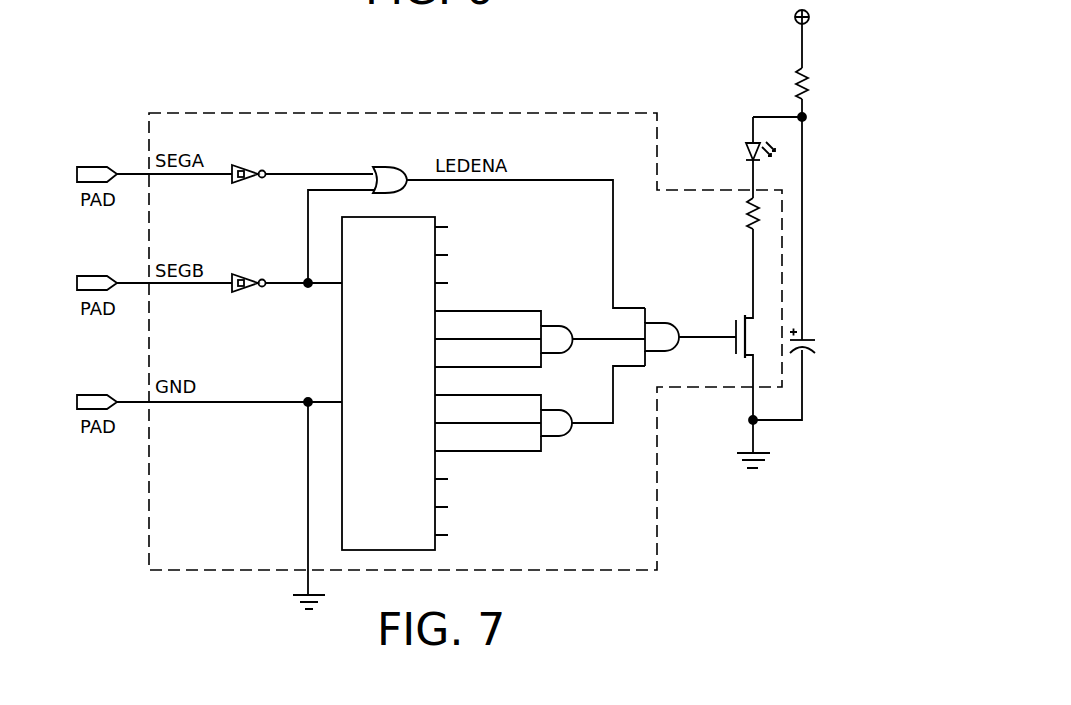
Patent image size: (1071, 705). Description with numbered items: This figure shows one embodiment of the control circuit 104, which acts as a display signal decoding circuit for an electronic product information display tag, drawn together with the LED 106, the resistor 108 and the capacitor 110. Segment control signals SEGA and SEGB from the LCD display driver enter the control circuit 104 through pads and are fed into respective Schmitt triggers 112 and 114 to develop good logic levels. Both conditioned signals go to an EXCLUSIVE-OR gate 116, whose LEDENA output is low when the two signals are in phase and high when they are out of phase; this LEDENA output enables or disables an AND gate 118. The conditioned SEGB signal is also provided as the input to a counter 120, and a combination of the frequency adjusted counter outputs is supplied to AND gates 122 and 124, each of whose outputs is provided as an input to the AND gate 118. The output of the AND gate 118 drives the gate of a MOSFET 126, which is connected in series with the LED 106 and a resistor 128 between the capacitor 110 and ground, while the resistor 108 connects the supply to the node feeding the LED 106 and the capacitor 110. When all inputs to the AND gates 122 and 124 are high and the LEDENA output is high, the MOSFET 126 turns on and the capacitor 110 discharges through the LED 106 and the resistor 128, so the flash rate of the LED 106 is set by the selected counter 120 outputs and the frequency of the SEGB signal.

The control circuit 104 is at (385, 112).
The LED 106 is at (749, 141).
The resistor 108 is at (797, 70).
The capacitor 110 is at (811, 338).
The Schmitt trigger 112 is at (245, 165).
The Schmitt trigger 114 is at (244, 274).
The EXCLUSIVE-OR gate 116 is at (387, 165).
The AND gate 118 is at (665, 323).
The counter 120 is at (342, 500).
The AND gate 122 is at (560, 326).
The AND gate 124 is at (562, 437).
The MOSFET 126 is at (735, 345).
The resistor 128 is at (745, 213).